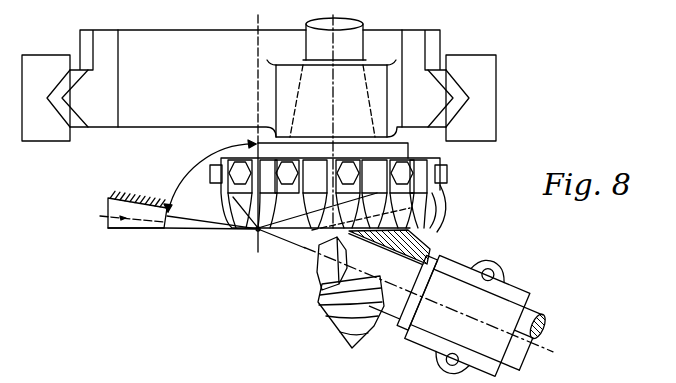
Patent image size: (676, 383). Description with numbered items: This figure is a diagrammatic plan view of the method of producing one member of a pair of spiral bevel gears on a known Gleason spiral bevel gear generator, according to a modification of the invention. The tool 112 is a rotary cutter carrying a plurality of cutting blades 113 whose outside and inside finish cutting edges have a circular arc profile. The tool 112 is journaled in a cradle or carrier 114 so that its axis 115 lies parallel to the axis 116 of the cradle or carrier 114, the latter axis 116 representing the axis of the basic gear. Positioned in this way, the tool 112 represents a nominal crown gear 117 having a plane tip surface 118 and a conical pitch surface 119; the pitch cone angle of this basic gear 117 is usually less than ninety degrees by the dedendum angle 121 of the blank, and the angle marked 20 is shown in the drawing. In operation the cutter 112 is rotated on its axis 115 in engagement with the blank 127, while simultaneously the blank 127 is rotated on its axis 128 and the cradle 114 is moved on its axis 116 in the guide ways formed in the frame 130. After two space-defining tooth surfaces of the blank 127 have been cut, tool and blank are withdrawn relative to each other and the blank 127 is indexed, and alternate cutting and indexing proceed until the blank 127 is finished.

The pivot angle 20 is at (210, 176).
The tool 112 is at (420, 158).
The cutting blades 113 is at (443, 214).
The cradle or carrier 114 is at (428, 45).
The axis of the tool 115 is at (335, 48).
The axis of the cradle 116 is at (258, 38).
The nominal crown gear 117 is at (108, 198).
The plane tip surface 118 is at (184, 232).
The conical pitch surface 119 is at (154, 222).
The dedendum angle 121 is at (116, 229).
The blank 127 is at (371, 326).
The axis of the blank 128 is at (543, 341).
The frame 130 is at (491, 119).